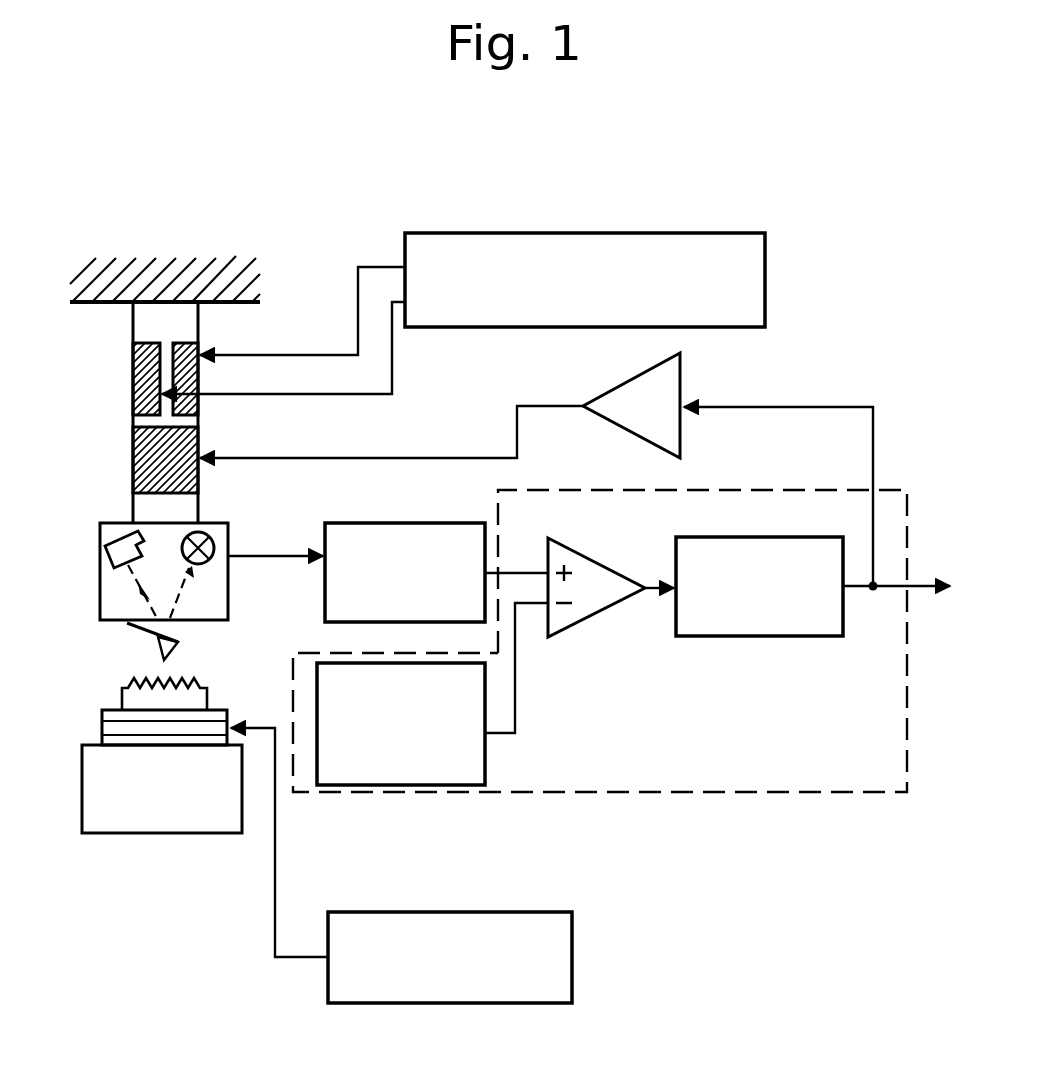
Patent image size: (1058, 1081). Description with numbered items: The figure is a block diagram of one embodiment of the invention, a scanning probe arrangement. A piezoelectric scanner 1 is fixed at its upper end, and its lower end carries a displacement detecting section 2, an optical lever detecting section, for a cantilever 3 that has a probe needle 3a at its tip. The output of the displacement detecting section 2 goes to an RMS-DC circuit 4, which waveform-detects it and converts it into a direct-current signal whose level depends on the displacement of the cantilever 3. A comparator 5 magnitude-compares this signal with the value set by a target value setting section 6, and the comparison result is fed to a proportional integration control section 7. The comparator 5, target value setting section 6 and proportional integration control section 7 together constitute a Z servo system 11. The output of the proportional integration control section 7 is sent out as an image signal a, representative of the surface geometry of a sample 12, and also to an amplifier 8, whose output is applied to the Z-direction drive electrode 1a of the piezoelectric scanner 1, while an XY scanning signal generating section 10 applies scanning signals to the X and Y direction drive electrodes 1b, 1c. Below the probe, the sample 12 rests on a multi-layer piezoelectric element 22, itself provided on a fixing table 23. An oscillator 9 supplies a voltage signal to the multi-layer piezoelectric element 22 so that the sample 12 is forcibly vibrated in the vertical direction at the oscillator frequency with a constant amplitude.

The piezoelectric scanner 1 is at (170, 412).
The Z-direction drive electrode 1a is at (150, 468).
The X direction drive electrode 1b is at (195, 377).
The Y direction drive electrode 1c is at (135, 362).
The displacement detecting section 2 is at (116, 576).
The cantilever 3 is at (152, 634).
The probe needle 3a is at (168, 656).
The RMS-DC circuit 4 is at (408, 523).
The comparator 5 is at (596, 572).
The target value setting section 6 is at (487, 756).
The proportional integration control section 7 is at (760, 637).
The amplifier 8 is at (616, 402).
The oscillator 9 is at (480, 912).
The XY scanning signal generating section 10 is at (532, 233).
The Z servo system 11 is at (636, 796).
The sample 12 is at (200, 682).
The multi-layer piezoelectric element 22 is at (100, 716).
The fixing table 23 is at (82, 765).
The image signal a is at (916, 590).